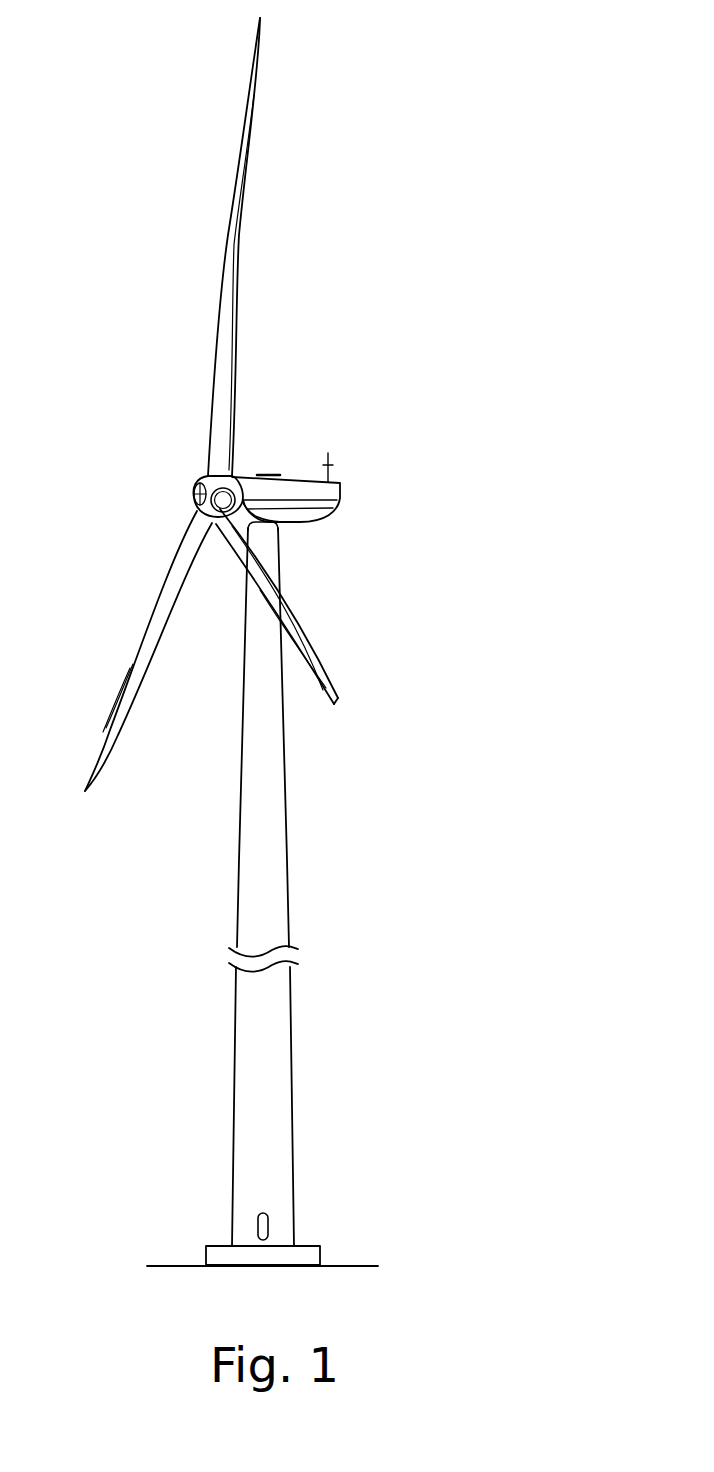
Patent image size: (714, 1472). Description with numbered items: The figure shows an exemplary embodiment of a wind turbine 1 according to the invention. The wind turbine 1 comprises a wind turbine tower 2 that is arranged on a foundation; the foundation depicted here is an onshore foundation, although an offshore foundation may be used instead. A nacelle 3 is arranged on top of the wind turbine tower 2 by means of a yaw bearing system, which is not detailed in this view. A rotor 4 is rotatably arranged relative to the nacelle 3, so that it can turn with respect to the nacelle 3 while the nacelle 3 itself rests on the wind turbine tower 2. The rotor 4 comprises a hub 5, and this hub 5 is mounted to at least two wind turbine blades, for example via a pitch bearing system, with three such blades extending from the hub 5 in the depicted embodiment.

The wind turbine 1 is at (122, 357).
The wind turbine tower 2 is at (272, 877).
The nacelle 3 is at (297, 487).
The rotor 4 is at (101, 418).
The hub 5 is at (195, 504).